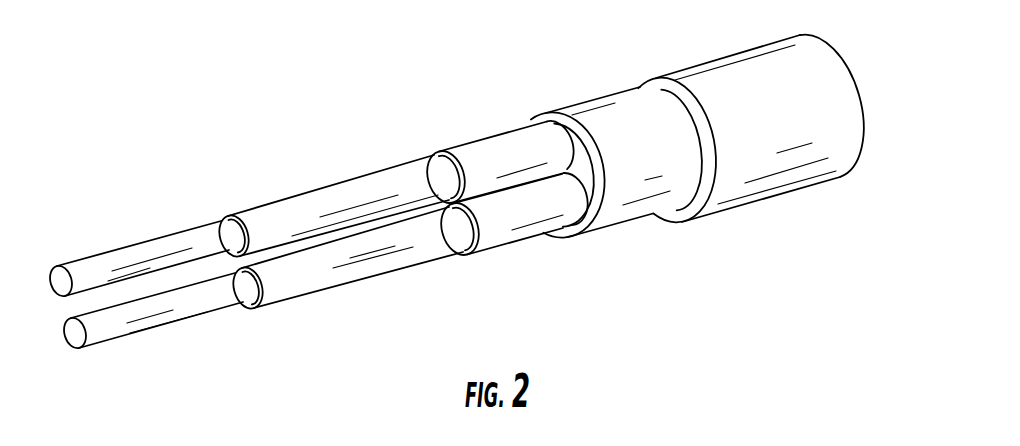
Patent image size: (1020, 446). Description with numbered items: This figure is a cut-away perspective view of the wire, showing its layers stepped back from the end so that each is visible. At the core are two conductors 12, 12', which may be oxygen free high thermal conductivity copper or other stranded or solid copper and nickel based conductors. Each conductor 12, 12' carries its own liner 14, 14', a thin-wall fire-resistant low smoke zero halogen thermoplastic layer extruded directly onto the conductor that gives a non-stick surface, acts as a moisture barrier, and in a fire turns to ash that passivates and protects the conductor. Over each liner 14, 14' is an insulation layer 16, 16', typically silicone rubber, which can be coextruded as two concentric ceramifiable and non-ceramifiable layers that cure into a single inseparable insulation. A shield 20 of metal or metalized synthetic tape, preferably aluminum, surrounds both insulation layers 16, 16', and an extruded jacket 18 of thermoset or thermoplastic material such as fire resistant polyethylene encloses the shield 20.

The conductor 12 is at (138, 255).
The conductor 12' is at (152, 326).
The liner 14 is at (332, 207).
The liner 14' is at (346, 269).
The insulation layer 16 is at (497, 157).
The insulation layer 16' is at (511, 233).
The jacket 18 is at (717, 57).
The shield 20 is at (597, 103).